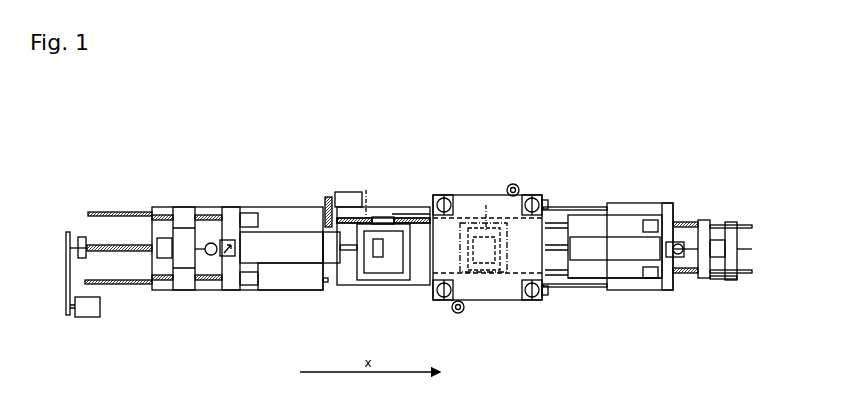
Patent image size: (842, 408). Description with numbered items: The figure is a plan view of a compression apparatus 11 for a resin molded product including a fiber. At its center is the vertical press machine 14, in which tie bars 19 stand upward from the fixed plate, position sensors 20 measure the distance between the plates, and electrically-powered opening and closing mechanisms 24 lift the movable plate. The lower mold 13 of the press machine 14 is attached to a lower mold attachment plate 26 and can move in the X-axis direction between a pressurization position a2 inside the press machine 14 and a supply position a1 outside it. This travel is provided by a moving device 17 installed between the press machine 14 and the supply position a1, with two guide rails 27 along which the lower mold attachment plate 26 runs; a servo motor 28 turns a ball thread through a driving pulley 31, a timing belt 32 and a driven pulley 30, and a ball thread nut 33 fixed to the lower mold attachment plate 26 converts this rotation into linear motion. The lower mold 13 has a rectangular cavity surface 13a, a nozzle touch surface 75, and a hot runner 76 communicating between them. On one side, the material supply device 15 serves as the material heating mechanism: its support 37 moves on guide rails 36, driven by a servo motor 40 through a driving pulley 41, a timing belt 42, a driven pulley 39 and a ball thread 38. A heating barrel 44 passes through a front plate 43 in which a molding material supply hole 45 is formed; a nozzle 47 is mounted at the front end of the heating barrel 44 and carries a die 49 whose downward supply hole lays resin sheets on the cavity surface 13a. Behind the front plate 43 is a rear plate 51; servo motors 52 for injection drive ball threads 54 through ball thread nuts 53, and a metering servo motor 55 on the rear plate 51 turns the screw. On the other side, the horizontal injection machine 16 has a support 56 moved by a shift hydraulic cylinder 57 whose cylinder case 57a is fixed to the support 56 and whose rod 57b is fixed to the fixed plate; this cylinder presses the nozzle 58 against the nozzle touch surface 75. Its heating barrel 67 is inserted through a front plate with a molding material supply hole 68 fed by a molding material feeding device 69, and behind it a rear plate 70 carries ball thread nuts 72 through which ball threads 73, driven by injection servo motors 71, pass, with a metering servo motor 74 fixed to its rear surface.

The compression apparatus 11 is at (590, 152).
The lower mold 13 is at (408, 286).
The cavity surface 13a is at (380, 258).
The vertical press machine 14 is at (518, 150).
The material supply device 15 is at (170, 205).
The horizontal injection machine 16 is at (645, 202).
The moving device 17 is at (399, 214).
The tie bar 19 is at (547, 200).
The position sensor 20 is at (442, 194).
The electrically-powered opening and closing mechanism 24 is at (516, 184).
The lower mold attachment plate 26 is at (424, 287).
The guide rail 27 is at (460, 194).
The servo motor 28 is at (340, 192).
The driven pulley 30 is at (324, 212).
The driving pulley 31 is at (350, 218).
The timing belt 32 is at (374, 217).
The ball thread nut 33 is at (388, 217).
The guide rail 36 is at (88, 212).
The support 37 is at (305, 276).
The ball thread 38 is at (97, 210).
The driven pulley 39 is at (63, 238).
The servo motor 40 is at (88, 318).
The driving pulley 41 is at (65, 312).
The timing belt 42 is at (64, 280).
The front plate 43 is at (226, 240).
The heating barrel 44 is at (281, 264).
The molding material supply hole 45 is at (183, 237).
The nozzle 47 is at (345, 264).
The die 49 is at (380, 274).
The rear plate 51 is at (185, 291).
The servo motor for injection 52 is at (233, 207).
The ball thread nut 53 is at (126, 243).
The ball thread 54 is at (208, 282).
The metering servo motor 55 is at (172, 292).
The support 56 is at (627, 291).
The shift hydraulic cylinder 57 is at (612, 247).
The cylinder case 57a is at (684, 220).
The rod 57b is at (575, 206).
The nozzle 58 is at (590, 280).
The heating barrel 67 is at (656, 202).
The molding material supply hole 68 is at (704, 220).
The molding material feeding device 69 is at (731, 222).
The rear plate 70 is at (738, 262).
The injection servo motor 71 is at (682, 241).
The ball thread nut 72 is at (752, 226).
The ball thread 73 is at (712, 281).
The metering servo motor 74 is at (726, 248).
The nozzle touch surface 75 is at (567, 275).
The hot runner 76 is at (525, 301).
The supply position a1 is at (366, 204).
The pressurization position a2 is at (496, 192).